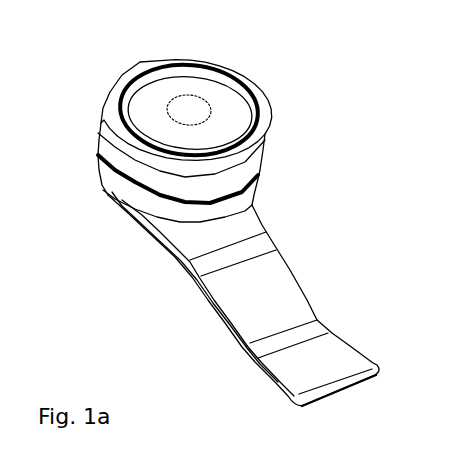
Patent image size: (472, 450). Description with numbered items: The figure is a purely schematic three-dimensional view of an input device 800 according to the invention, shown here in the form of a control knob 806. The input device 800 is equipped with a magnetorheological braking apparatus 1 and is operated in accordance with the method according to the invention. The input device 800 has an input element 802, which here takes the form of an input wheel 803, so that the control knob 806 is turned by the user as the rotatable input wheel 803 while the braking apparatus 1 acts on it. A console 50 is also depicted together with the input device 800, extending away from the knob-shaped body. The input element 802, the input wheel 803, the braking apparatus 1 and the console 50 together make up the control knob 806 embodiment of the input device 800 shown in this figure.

The input device 800 is at (89, 71).
The braking apparatus 1 is at (138, 60).
The input wheel 803 is at (262, 131).
The control knob 806 is at (100, 143).
The input element 802 is at (143, 174).
The console 50 is at (283, 295).